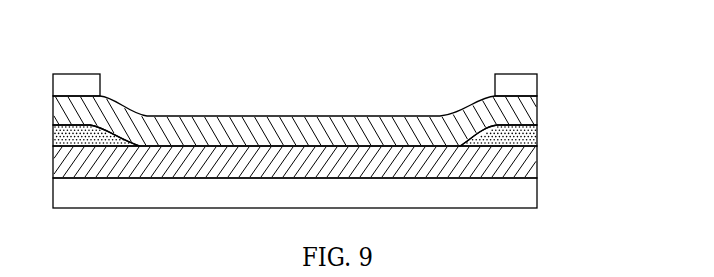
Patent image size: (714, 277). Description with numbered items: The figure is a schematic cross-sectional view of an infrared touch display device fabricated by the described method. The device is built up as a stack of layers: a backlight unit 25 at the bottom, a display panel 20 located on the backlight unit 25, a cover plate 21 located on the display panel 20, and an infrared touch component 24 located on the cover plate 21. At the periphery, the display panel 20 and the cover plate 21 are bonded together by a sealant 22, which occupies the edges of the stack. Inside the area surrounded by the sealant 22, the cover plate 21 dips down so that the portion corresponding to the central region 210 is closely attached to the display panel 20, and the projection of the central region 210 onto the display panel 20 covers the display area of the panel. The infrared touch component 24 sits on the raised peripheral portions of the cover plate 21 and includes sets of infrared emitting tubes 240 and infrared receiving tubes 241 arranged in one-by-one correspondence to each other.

The display panel 20 is at (530, 175).
The cover plate 21 is at (530, 110).
The sealant 22 is at (530, 143).
The infrared touch component 24 is at (572, 21).
The backlight unit 25 is at (530, 202).
The central region 210 is at (467, 112).
The infrared emitting tubes 240 is at (78, 88).
The infrared receiving tubes 241 is at (515, 86).